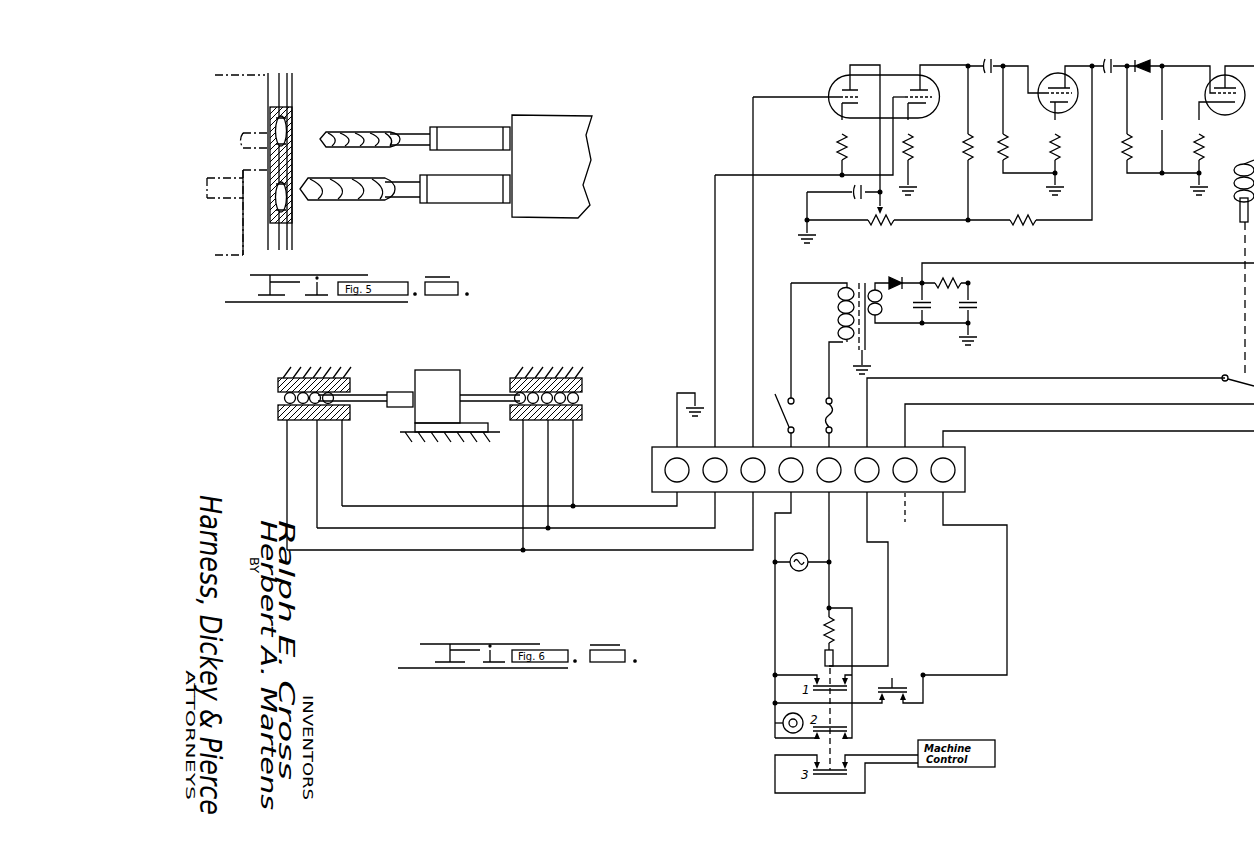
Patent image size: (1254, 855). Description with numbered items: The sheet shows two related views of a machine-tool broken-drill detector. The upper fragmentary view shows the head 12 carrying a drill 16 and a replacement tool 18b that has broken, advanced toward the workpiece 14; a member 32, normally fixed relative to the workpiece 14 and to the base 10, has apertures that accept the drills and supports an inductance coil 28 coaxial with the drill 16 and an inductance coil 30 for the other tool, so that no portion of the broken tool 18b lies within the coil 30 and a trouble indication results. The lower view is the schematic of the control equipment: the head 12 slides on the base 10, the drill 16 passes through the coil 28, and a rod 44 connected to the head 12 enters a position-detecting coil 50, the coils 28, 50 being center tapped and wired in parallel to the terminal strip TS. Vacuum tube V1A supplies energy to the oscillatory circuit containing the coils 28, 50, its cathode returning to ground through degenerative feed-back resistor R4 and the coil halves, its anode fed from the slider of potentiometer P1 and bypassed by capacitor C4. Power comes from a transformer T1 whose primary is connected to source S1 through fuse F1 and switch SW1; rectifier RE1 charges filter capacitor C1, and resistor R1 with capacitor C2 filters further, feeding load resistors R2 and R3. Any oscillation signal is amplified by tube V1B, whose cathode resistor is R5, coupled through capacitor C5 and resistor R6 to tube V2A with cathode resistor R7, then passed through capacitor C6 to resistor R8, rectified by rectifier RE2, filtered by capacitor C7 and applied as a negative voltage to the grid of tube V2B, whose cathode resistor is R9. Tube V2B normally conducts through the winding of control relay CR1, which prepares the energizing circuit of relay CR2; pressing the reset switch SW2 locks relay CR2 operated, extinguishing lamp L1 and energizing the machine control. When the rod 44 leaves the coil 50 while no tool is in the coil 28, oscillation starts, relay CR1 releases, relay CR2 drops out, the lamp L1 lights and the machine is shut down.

In FIG. 6, the base 10 is at (447, 428).
In FIG. 5, the head 12 is at (565, 116).
In FIG. 6, the head 12 is at (440, 368).
In FIG. 5, the workpiece 14 is at (205, 252).
In FIG. 5, the drill 16 is at (407, 127).
In FIG. 6, the drill 16 is at (374, 392).
In FIG. 5, the tool 18b is at (396, 190).
In FIG. 5, the inductance coil 28 is at (290, 133).
In FIG. 6, the inductance coil 28 is at (320, 378).
In FIG. 5, the inductance coil 30 is at (290, 196).
In FIG. 5, the member 32 is at (293, 161).
In FIG. 6, the rod 44 is at (470, 392).
In FIG. 6, the inductance coil 50 is at (535, 395).
In FIG. 6, the terminal strip TS is at (652, 468).
In FIG. 6, the switch SW1 is at (798, 365).
In FIG. 6, the reset button switch SW2 is at (895, 688).
In FIG. 6, the fuse F1 is at (833, 415).
In FIG. 6, the transformer T1 is at (860, 282).
In FIG. 6, the rectifier RE1 is at (893, 277).
In FIG. 6, the rectifier RE2 is at (1148, 62).
In FIG. 6, the resistor R1 is at (952, 275).
In FIG. 6, the load resistor R2 is at (965, 150).
In FIG. 6, the load resistor R3 is at (1025, 224).
In FIG. 6, the degenerative feed-back resistor R4 is at (838, 147).
In FIG. 6, the resistor R5 is at (916, 152).
In FIG. 6, the resistor R6 is at (1006, 152).
In FIG. 6, the resistor R7 is at (1056, 148).
In FIG. 6, the resistor R8 is at (1125, 160).
In FIG. 6, the resistor R9 is at (1205, 148).
In FIG. 6, the filter capacitor C1 is at (921, 312).
In FIG. 6, the capacitor C2 is at (979, 306).
In FIG. 6, the bypass capacitor C4 is at (853, 193).
In FIG. 6, the capacitor C5 is at (988, 62).
In FIG. 6, the capacitor C6 is at (1109, 57).
In FIG. 6, the capacitor C7 is at (1172, 129).
In FIG. 6, the potentiometer P1 is at (890, 225).
In FIG. 6, the vacuum tube V1A is at (832, 80).
In FIG. 6, the vacuum tube V1B is at (930, 84).
In FIG. 6, the vacuum tube V2A is at (1060, 73).
In FIG. 6, the vacuum tube V2B is at (1208, 86).
In FIG. 6, the control relay CR1 is at (1238, 207).
In FIG. 6, the relay CR2 is at (826, 660).
In FIG. 6, the source S1 is at (808, 553).
In FIG. 6, the lamp L1 is at (783, 723).